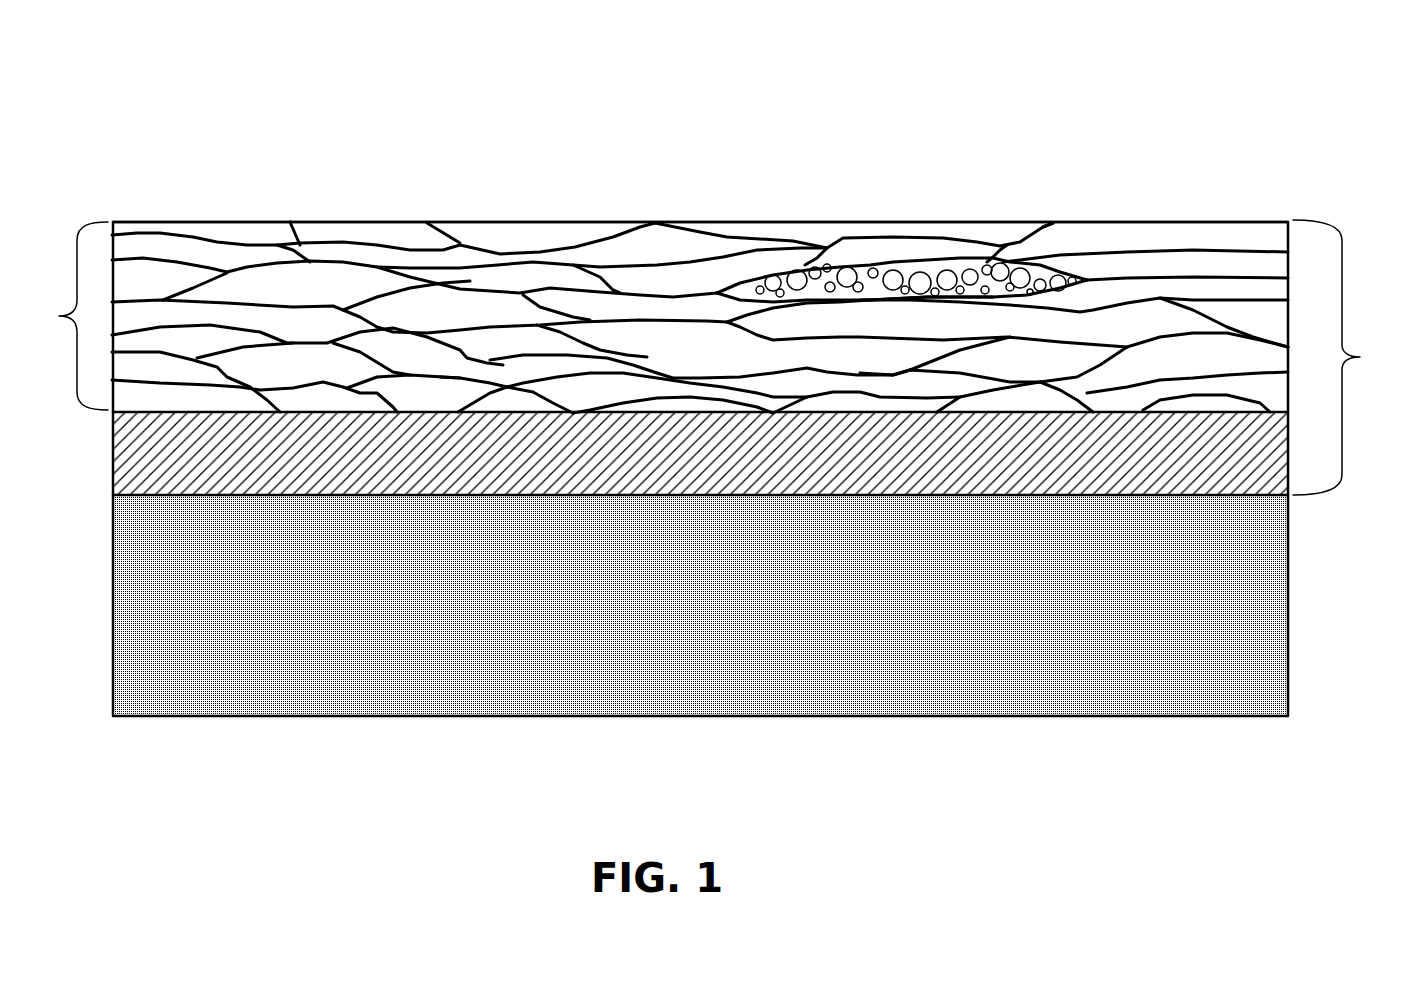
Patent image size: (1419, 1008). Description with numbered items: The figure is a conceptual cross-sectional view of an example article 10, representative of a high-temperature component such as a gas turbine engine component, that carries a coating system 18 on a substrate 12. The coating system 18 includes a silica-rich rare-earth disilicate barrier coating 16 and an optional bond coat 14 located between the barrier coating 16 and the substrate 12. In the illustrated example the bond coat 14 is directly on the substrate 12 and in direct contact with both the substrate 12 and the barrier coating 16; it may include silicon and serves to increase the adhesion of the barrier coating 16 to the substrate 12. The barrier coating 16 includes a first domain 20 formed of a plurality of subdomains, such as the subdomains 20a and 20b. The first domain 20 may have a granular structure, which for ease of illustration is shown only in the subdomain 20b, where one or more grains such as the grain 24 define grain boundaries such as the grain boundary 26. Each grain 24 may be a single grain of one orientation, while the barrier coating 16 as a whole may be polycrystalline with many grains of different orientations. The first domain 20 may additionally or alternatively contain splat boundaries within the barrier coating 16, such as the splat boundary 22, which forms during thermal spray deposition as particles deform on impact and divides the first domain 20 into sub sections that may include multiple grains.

The article 10 is at (1232, 95).
The substrate 12 is at (113, 583).
The bond coat 14 is at (113, 468).
The barrier coating 16 is at (230, 222).
The coating system 18 is at (1346, 357).
The first domain 20 is at (655, 267).
The subdomain 20a is at (892, 250).
The subdomain 20b is at (933, 267).
The splat boundary 22 is at (1022, 237).
The grain 24 is at (788, 277).
The grain boundary 26 is at (1052, 265).